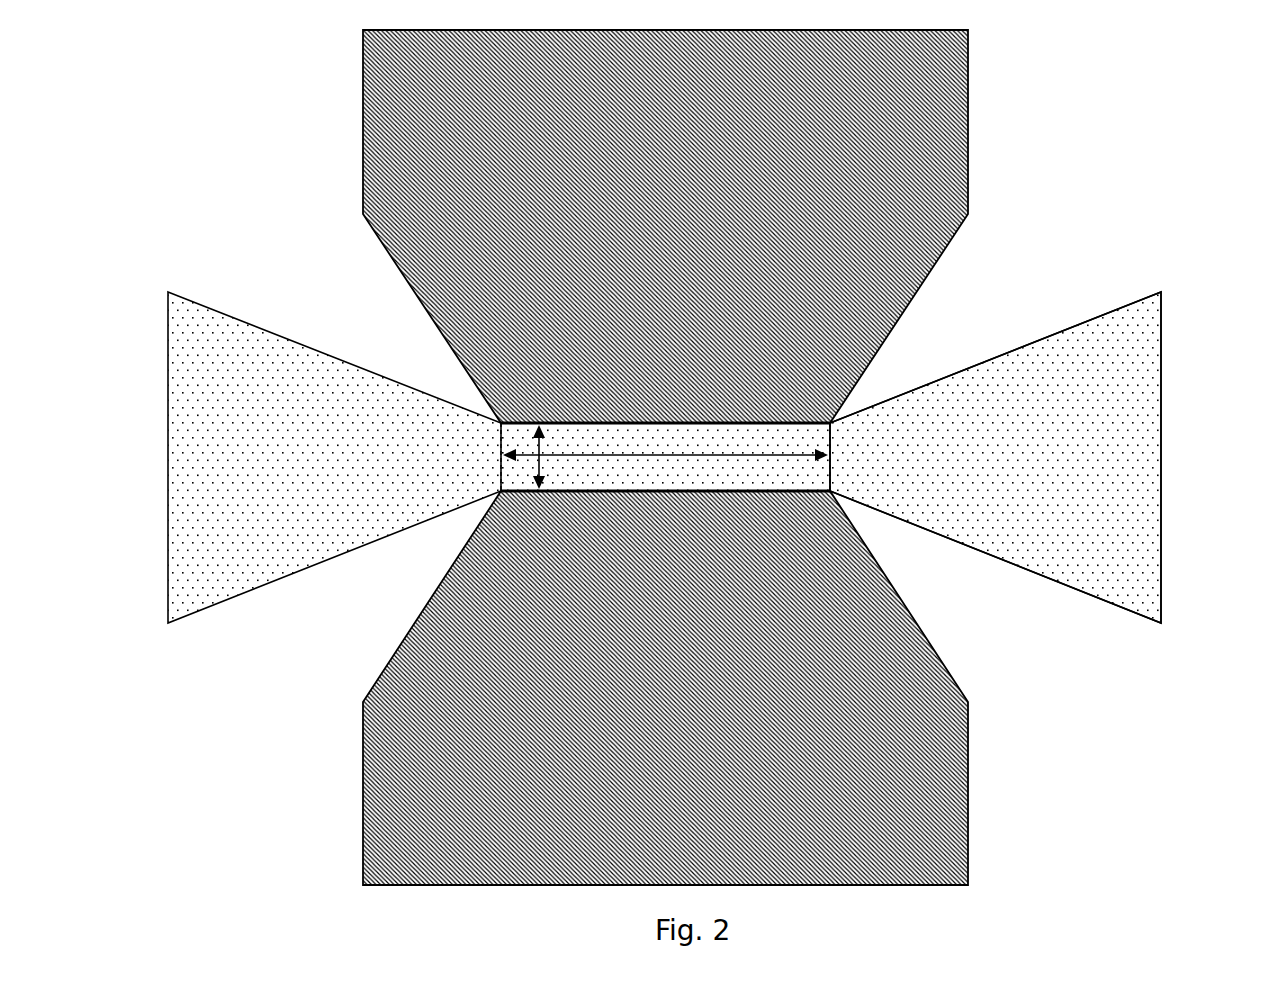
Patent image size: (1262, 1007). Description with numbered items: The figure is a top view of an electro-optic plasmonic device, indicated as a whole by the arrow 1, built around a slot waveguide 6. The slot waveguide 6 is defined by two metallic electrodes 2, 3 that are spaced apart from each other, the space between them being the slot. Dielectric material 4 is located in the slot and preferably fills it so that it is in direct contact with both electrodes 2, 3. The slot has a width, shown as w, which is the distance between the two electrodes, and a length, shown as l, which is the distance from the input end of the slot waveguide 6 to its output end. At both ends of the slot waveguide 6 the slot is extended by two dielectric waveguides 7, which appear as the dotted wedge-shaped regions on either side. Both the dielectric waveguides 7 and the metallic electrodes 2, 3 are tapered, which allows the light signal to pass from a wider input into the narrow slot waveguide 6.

The device 1 is at (298, 129).
The metallic electrode 2 is at (390, 178).
The metallic electrode 3 is at (442, 677).
The dielectric material 4 is at (1010, 413).
The slot waveguide 6 is at (807, 480).
The dielectric waveguide 7 is at (295, 490).